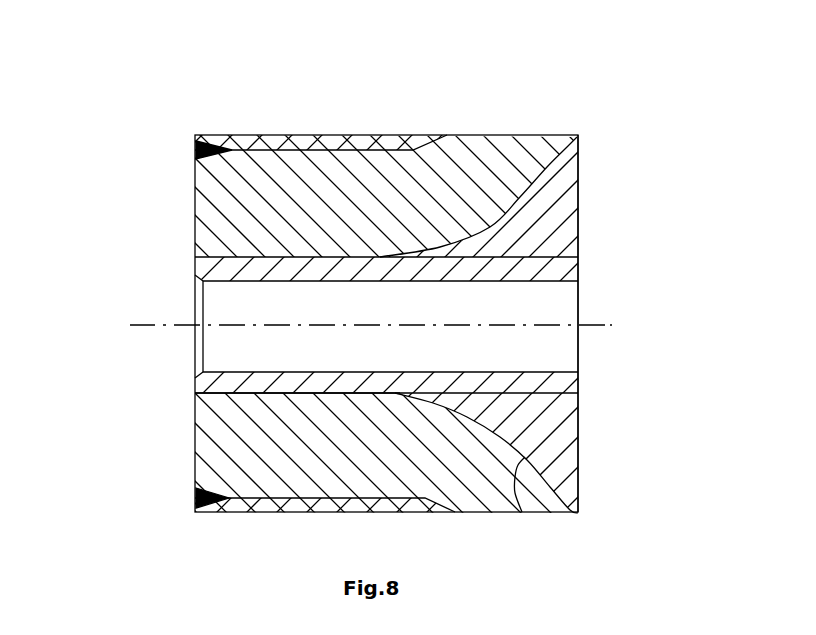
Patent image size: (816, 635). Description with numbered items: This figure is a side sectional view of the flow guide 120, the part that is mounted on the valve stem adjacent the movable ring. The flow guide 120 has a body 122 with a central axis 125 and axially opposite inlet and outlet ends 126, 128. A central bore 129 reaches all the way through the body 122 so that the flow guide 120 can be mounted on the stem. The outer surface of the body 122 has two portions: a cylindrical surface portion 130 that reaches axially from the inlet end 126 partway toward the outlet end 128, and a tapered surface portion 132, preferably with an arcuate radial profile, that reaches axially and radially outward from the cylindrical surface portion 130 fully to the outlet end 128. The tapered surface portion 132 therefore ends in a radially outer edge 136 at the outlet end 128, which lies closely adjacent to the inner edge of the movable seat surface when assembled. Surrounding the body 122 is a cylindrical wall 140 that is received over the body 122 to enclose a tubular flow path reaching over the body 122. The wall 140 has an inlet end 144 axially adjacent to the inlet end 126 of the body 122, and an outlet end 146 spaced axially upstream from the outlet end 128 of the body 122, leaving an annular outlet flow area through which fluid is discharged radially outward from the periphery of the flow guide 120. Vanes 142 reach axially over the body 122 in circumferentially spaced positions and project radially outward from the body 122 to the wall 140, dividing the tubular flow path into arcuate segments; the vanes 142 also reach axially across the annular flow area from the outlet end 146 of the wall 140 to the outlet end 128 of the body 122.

The flow guide 120 is at (243, 112).
The body 122 is at (262, 383).
The central axis 125 is at (148, 325).
The inlet end 126 is at (197, 378).
The outlet end 128 is at (578, 426).
The central bore 129 is at (358, 316).
The cylindrical surface portion 130 is at (307, 393).
The tapered surface portion 132 is at (520, 513).
The radially outer edge 136 is at (568, 513).
The cylindrical wall 140 is at (338, 137).
The vanes 142 is at (230, 218).
The inlet end of the wall 144 is at (197, 146).
The outlet end of the wall 146 is at (445, 140).